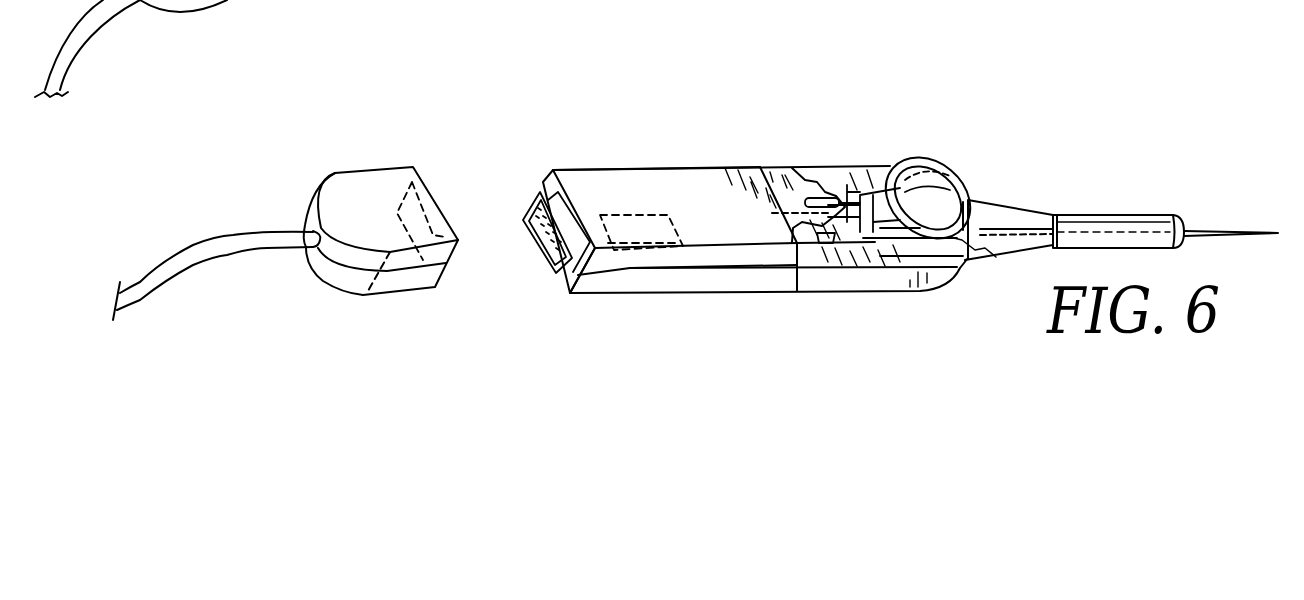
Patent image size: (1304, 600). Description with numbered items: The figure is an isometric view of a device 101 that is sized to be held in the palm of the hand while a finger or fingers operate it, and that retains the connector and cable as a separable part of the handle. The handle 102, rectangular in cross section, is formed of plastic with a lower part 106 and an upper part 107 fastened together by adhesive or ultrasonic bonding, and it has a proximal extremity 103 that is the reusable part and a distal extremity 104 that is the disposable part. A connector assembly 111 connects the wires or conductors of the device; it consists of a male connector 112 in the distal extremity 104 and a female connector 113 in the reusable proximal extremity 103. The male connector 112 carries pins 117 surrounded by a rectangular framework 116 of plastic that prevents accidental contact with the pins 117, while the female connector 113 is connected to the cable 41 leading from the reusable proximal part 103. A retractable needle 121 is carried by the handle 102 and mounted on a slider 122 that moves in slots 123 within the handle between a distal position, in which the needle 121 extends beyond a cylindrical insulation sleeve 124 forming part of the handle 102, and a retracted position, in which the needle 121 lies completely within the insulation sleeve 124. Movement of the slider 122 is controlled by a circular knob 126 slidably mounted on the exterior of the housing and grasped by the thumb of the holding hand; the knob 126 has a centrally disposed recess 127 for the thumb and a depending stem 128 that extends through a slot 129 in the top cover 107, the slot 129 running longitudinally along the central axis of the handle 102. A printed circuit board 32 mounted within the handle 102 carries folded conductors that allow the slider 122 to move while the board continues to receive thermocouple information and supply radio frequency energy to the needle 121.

The cable 41 is at (82, 25).
The printed circuit board 32 is at (647, 213).
The device 101 is at (740, 94).
The handle 102 is at (768, 144).
The proximal extremity 103 is at (390, 283).
The distal extremity 104 is at (806, 198).
The lower part 106 is at (710, 277).
The upper part 107 is at (707, 177).
The connector assembly 111 is at (463, 283).
The male connector 112 is at (566, 294).
The female connector 113 is at (411, 182).
The rectangular framework 116 is at (542, 192).
The pins 117 is at (533, 238).
The retractable needle 121 is at (1222, 230).
The slider 122 is at (882, 237).
The slots 123 is at (848, 222).
The cylindrical insulation sleeve 124 is at (1090, 222).
The circular knob 126 is at (938, 168).
The recess 127 is at (952, 185).
The depending stem 128 is at (942, 158).
The slot 129 is at (834, 200).